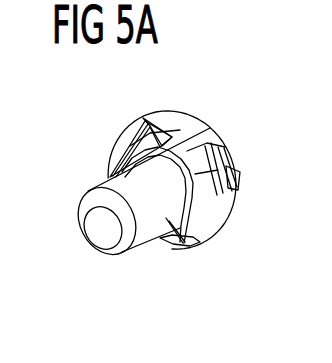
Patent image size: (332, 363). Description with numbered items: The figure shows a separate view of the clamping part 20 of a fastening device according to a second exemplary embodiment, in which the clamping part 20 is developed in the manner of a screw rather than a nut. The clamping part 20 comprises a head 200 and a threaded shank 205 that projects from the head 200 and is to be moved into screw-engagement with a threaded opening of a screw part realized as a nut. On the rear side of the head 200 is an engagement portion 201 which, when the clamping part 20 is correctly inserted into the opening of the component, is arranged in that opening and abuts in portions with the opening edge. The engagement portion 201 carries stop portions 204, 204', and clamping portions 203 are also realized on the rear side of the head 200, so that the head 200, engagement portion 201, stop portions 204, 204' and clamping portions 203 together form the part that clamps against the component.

The clamping part 20 is at (148, 261).
The head 200 is at (226, 203).
The engagement portion 201 is at (205, 213).
The clamping portions 203 is at (126, 138).
The stop portion 204 is at (261, 180).
The stop portion 204' is at (177, 187).
The threaded shank 205 is at (110, 183).